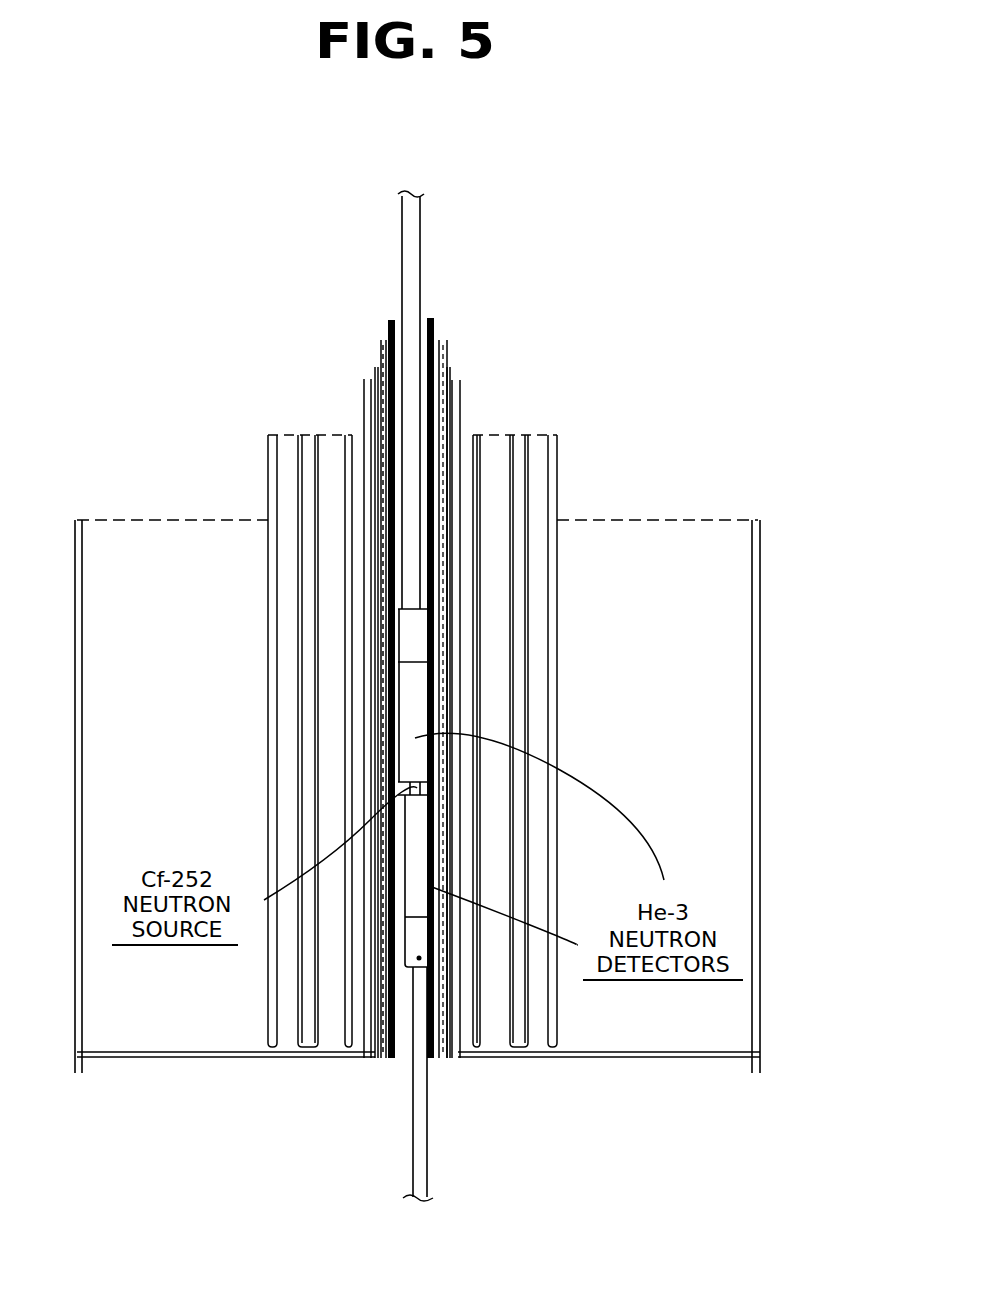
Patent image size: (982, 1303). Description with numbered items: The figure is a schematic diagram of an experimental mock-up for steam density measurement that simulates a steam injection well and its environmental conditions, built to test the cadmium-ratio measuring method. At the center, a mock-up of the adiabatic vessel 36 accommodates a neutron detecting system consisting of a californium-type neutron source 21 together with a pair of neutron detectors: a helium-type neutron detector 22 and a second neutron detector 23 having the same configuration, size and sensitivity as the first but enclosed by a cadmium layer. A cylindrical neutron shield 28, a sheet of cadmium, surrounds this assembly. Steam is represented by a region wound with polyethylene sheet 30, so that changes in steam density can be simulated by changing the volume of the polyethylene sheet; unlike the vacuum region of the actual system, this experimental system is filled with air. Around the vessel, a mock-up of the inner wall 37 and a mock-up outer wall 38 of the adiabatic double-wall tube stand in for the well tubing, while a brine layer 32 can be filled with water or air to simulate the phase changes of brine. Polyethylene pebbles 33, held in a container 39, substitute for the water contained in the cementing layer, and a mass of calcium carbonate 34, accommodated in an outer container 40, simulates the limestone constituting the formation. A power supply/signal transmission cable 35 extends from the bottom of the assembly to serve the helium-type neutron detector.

The Cf-252 type neutron source 21 is at (412, 792).
The He-3 type neutron detector 22 is at (420, 858).
The neutron detector enclosed by a cadmium layer 23 is at (418, 722).
The cylindrical neutron shield 28 is at (447, 370).
The region wound with polyethylene sheet 30 is at (445, 394).
The brine layer 32 is at (497, 445).
The polyethylene pebbles 33 is at (540, 465).
The mass of calcium carbonate 34 is at (735, 617).
The power supply/signal transmission cable 35 is at (428, 1135).
The mock-up of the adiabatic vessel 36 is at (392, 320).
The mock-up of the inner wall of the adiabatic double-wall tube 37 is at (364, 380).
The mock-up outer wall of the adiabatic double-wall tube 38 is at (348, 437).
The container housing the polyethylene pebbles 39 is at (277, 465).
The container for accommodating calcium carbonate 40 is at (76, 520).